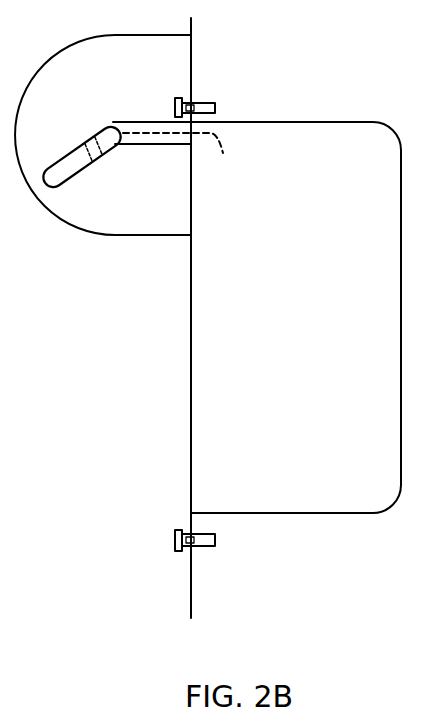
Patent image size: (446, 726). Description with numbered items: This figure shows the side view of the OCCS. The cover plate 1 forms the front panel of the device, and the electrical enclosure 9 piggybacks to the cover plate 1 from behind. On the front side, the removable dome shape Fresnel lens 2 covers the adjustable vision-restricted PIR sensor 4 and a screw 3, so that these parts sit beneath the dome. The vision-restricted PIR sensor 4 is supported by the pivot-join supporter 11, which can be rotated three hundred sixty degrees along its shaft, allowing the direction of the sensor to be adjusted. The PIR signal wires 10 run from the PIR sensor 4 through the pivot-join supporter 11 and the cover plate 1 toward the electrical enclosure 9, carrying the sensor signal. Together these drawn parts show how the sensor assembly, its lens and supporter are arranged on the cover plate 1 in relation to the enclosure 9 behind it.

The cover plate 1 is at (227, 318).
The removable dome shape Fresnel lens 2 is at (47, 78).
The screw 3 is at (173, 540).
The adjustable vision-restricted PIR sensor 4 is at (75, 152).
The electrical enclosure 9 is at (296, 296).
The PIR signal wires 10 is at (211, 162).
The pivot-join supporter 11 is at (152, 159).